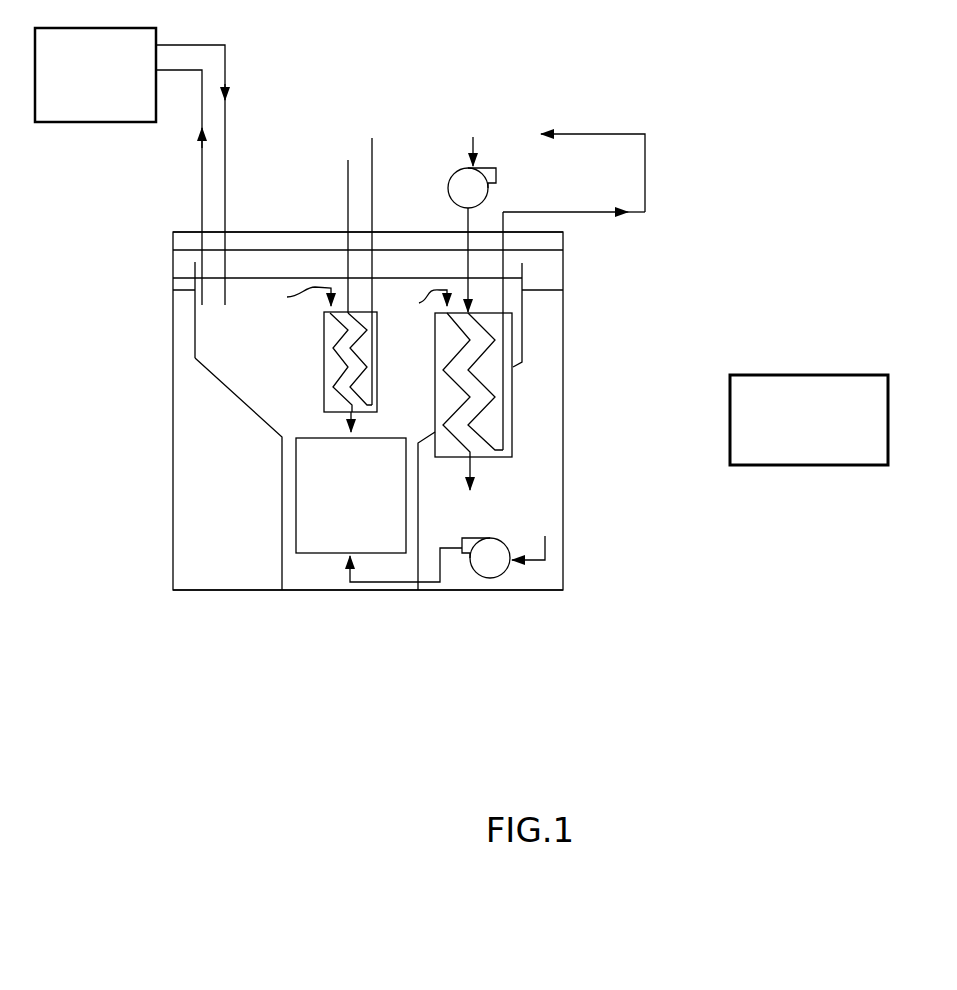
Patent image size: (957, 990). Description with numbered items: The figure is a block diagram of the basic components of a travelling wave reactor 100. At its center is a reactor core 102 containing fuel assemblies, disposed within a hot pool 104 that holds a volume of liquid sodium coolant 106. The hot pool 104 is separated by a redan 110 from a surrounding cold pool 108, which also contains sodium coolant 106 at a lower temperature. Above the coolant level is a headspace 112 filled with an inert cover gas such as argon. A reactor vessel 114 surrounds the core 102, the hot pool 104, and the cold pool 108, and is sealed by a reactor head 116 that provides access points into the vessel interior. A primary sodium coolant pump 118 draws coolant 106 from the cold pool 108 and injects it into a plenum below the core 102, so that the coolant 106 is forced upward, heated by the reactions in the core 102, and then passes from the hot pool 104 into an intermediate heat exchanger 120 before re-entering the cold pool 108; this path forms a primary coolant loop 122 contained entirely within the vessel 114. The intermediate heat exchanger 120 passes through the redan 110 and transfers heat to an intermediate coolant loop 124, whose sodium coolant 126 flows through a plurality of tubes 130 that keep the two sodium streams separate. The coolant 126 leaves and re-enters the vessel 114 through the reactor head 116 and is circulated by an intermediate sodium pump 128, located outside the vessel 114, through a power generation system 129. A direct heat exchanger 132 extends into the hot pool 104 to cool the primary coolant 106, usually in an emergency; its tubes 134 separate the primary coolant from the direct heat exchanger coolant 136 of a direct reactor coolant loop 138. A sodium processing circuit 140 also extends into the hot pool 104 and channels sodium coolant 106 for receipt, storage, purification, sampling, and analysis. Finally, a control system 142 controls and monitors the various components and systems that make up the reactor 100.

The traveling wave reactor 100 is at (730, 80).
The reactor core 102 is at (313, 553).
The hot pool 104 is at (253, 315).
The liquid sodium coolant 106 is at (626, 548).
The cold pool 108 is at (182, 387).
The redan 110 is at (266, 437).
The headspace 112 is at (212, 260).
The reactor vessel 114 is at (173, 556).
The reactor head 116 is at (268, 232).
The primary sodium coolant pump 118 is at (510, 577).
The intermediate heat exchanger 120 is at (515, 418).
The primary coolant loop 122 is at (602, 513).
The intermediate coolant loop 124 is at (722, 218).
The sodium coolant 126 is at (466, 222).
The intermediate sodium pump 128 is at (500, 172).
The power generation system 129 is at (540, 102).
The tubes 130 is at (515, 386).
The direct heat exchanger 132 is at (325, 345).
The tubes 134 is at (366, 381).
The direct heat exchanger coolant 136 is at (372, 138).
The direct reactor coolant loop 138 is at (349, 140).
The sodium processing circuit 140 is at (95, 75).
The control system 142 is at (797, 375).